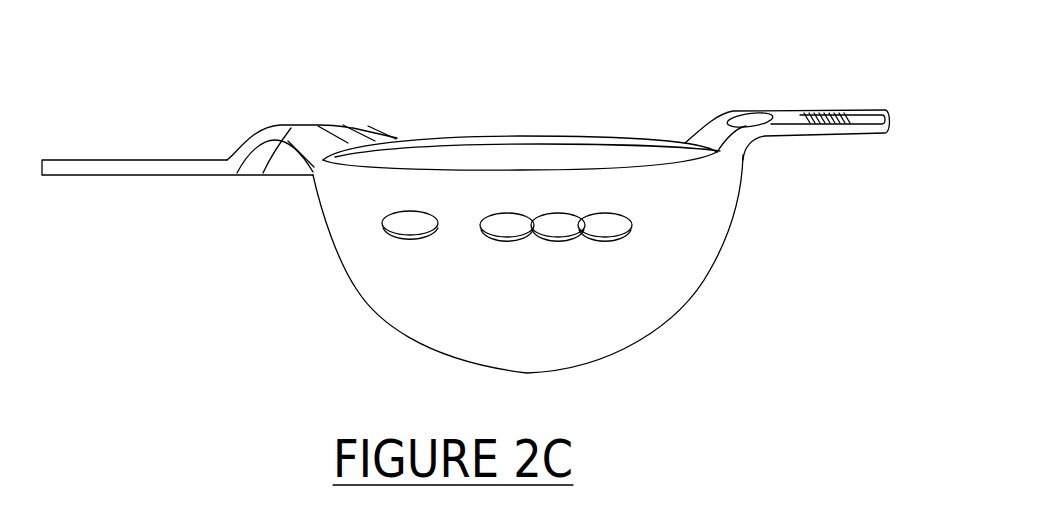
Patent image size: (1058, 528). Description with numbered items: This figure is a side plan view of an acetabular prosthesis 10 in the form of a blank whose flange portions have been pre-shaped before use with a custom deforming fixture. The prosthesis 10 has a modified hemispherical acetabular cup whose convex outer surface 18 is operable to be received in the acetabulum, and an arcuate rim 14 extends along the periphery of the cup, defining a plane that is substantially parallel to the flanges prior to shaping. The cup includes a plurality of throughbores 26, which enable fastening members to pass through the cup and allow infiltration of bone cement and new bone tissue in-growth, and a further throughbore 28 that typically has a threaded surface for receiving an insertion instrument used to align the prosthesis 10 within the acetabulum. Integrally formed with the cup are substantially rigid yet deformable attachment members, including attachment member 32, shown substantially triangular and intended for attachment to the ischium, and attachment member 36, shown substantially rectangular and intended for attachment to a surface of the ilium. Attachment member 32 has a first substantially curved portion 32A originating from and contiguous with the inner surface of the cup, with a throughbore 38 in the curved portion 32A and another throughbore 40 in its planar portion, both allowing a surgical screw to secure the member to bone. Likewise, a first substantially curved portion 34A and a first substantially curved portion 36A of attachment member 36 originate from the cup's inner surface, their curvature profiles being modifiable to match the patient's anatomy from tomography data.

The acetabular prosthesis 10 is at (607, 110).
The rim 14 is at (472, 138).
The outer surface 18 is at (682, 275).
The throughbores 26 is at (560, 245).
The throughbore 28 is at (410, 245).
The attachment member 32 is at (867, 106).
The first substantially curved portion 32A is at (718, 132).
The first substantially curved portion 34A is at (365, 132).
The attachment member 36 is at (84, 196).
The first substantially curved portion 36A is at (250, 126).
The throughbore 38 is at (735, 117).
The throughbore 40 is at (803, 113).